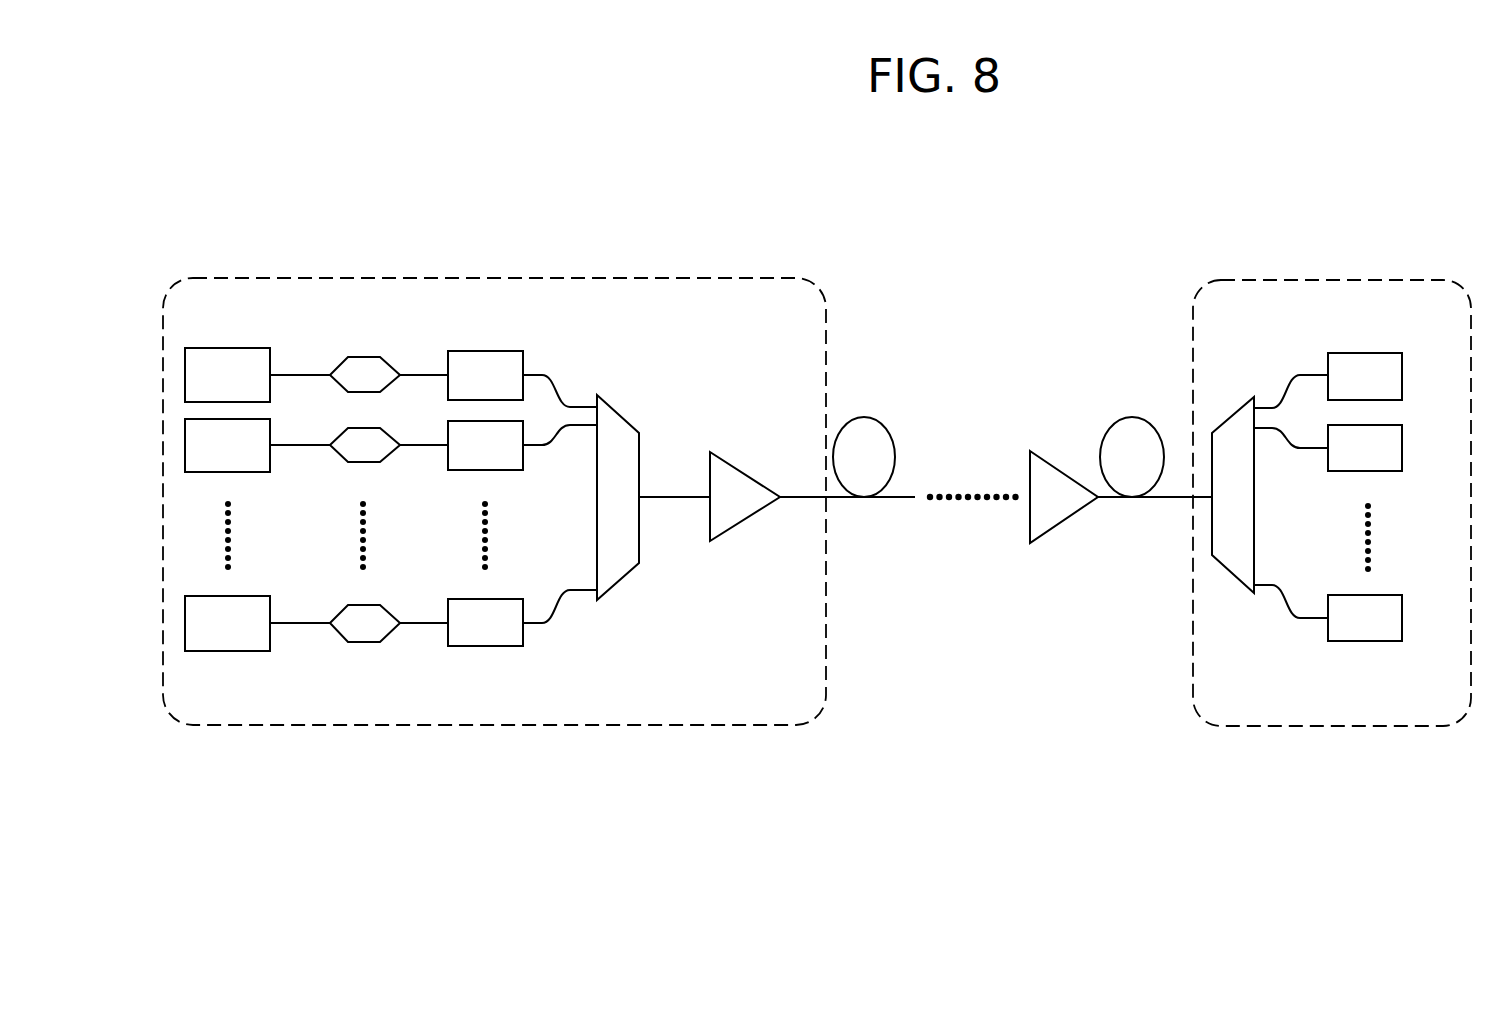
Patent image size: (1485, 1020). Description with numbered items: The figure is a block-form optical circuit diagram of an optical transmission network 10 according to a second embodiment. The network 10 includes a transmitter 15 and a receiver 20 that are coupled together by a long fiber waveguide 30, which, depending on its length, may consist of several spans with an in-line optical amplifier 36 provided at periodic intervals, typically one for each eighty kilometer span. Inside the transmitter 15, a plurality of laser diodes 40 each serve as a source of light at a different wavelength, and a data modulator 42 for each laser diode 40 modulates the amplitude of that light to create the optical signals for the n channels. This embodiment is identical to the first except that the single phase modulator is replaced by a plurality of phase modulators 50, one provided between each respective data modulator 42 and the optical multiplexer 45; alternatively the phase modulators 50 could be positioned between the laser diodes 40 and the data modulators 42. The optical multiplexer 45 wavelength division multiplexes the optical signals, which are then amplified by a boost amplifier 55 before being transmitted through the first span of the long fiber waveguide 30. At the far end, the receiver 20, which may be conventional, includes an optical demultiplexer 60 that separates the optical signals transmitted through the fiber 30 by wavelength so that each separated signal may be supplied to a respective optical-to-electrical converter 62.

The optical transmission network 10 is at (1047, 229).
The transmitter 15 is at (626, 276).
The receiver 20 is at (1386, 278).
The long fiber waveguide 30 is at (885, 424).
The in-line optical amplifier 36 is at (1045, 535).
The laser diode 40 is at (220, 348).
The data modulator 42 is at (368, 358).
The optical multiplexer 45 is at (628, 571).
The phase modulator 50 is at (483, 351).
The boost amplifier 55 is at (727, 533).
The optical demultiplexer 60 is at (1222, 563).
The optical-to-electrical converter 62 is at (1368, 658).